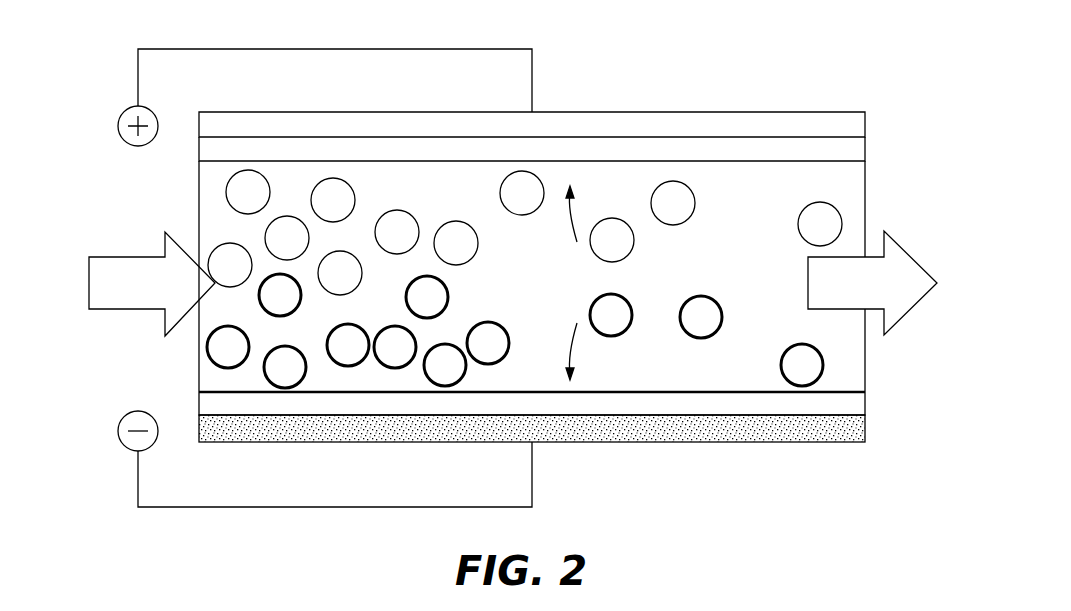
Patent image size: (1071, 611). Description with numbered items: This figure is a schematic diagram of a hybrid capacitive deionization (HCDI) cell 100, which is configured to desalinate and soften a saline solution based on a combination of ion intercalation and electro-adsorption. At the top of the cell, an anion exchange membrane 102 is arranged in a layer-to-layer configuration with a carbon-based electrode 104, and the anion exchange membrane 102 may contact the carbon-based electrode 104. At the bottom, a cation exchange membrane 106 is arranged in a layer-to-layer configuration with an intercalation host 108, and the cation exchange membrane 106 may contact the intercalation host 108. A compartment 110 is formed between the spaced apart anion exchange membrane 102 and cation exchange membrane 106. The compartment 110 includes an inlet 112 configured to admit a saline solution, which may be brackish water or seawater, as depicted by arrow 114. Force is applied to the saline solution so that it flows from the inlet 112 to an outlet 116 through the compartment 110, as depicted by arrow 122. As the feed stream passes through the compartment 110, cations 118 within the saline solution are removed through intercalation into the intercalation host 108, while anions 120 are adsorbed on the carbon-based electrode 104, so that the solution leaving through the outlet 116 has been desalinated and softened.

The hybrid capacitive deionization cell 100 is at (819, 470).
The anion exchange membrane 102 is at (197, 148).
The carbon-based electrode 104 is at (767, 112).
The cation exchange membrane 106 is at (867, 403).
The intercalation host 108 is at (768, 443).
The compartment 110 is at (763, 214).
The inlet 112 is at (215, 379).
The arrow 114 is at (89, 283).
The outlet 116 is at (855, 345).
The cations 118 is at (445, 387).
The anions 120 is at (843, 224).
The arrow 122 is at (920, 250).